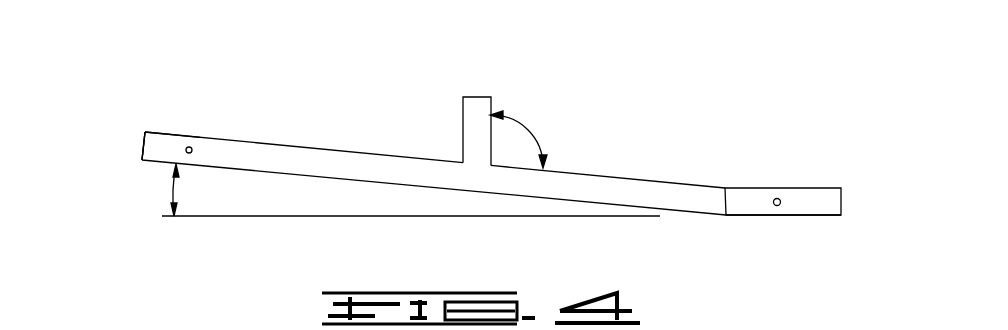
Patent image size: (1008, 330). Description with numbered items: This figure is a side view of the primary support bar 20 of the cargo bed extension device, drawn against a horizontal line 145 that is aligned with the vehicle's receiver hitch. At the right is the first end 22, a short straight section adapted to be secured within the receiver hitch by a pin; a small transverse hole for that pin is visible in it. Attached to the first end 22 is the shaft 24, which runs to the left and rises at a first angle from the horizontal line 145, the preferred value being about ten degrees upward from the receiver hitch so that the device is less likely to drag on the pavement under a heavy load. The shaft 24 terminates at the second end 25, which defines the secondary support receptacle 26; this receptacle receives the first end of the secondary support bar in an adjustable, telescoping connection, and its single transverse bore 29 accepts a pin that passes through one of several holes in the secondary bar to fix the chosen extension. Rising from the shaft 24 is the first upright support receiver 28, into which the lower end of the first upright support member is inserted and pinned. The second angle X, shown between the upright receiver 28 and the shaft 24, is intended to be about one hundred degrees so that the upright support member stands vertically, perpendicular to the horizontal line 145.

The primary support bar 20 is at (703, 88).
The first end 22 is at (810, 188).
The shaft 24 is at (585, 180).
The second end 25 is at (162, 132).
The secondary support receptacle 26 is at (142, 143).
The first upright support receiver 28 is at (463, 123).
The transverse bore 29 is at (192, 147).
The horizontal line 145 is at (305, 216).
The second angle X is at (527, 128).